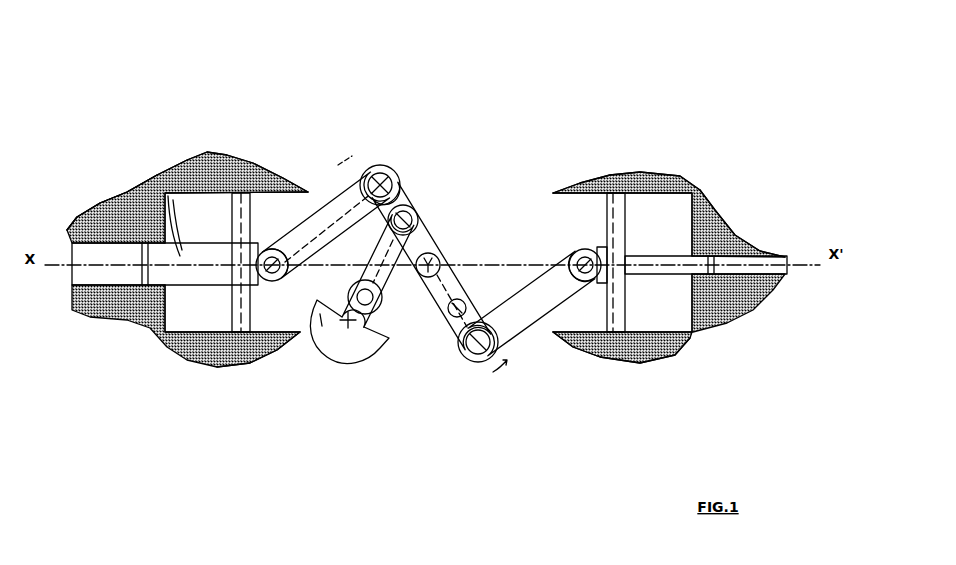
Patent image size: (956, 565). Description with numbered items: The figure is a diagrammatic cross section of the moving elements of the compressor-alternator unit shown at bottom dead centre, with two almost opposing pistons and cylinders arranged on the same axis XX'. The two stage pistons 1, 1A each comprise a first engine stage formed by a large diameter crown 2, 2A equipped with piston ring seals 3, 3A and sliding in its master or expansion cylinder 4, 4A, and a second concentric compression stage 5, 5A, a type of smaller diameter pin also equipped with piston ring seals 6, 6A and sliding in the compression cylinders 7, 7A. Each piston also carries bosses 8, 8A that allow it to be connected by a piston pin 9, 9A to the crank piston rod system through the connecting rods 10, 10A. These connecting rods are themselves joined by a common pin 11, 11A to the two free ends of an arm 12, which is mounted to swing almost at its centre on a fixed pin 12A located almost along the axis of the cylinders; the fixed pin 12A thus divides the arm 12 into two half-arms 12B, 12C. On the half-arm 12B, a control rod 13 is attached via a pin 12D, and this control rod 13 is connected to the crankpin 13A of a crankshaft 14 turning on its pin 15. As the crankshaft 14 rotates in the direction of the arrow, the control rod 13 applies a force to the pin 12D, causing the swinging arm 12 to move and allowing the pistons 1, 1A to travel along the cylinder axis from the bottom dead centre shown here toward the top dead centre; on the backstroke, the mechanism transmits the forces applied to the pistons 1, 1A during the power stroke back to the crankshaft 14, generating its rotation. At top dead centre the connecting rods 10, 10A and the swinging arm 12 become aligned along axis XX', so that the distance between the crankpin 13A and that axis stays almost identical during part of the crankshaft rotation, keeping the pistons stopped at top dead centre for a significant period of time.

The two stage piston 1 is at (248, 190).
The large diameter crown 2 is at (240, 190).
The piston ring seals 3 is at (215, 150).
The master or expansion cylinder 4 is at (172, 153).
The second concentric compression stage 5 is at (120, 173).
The piston ring seals 6 is at (97, 182).
The compression cylinder 7 is at (82, 315).
The boss 8 is at (268, 205).
The piston pin 9 is at (238, 367).
The connecting rod 10 is at (292, 285).
The common pin 11 is at (375, 175).
The common pin 11A is at (476, 363).
The arm 12 is at (428, 280).
The fixed pin 12A is at (436, 255).
The half-arm 12B is at (407, 187).
The half-arm 12C is at (462, 300).
The pin 12D is at (412, 207).
The control rod 13 is at (386, 342).
The crankpin 13A is at (362, 325).
The crankshaft 14 is at (333, 342).
The pin 15 is at (352, 328).
The two stage piston 1A is at (605, 290).
The large diameter crown 2A is at (617, 193).
The piston ring seals 3A is at (612, 355).
The master or expansion cylinder 4A is at (678, 180).
The second concentric compression stage 5A is at (720, 217).
The piston ring seals 6A is at (715, 323).
The compression cylinder 7A is at (767, 303).
The boss 8A is at (594, 245).
The piston pin 9A is at (568, 347).
The connecting rod 10A is at (518, 328).